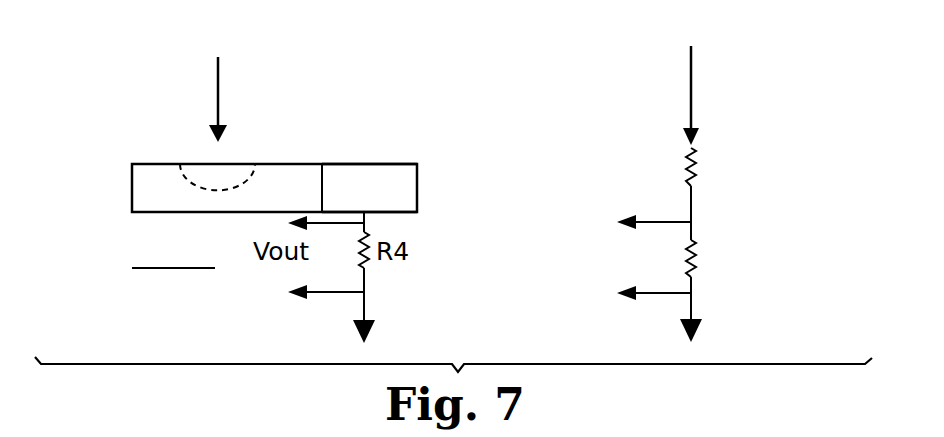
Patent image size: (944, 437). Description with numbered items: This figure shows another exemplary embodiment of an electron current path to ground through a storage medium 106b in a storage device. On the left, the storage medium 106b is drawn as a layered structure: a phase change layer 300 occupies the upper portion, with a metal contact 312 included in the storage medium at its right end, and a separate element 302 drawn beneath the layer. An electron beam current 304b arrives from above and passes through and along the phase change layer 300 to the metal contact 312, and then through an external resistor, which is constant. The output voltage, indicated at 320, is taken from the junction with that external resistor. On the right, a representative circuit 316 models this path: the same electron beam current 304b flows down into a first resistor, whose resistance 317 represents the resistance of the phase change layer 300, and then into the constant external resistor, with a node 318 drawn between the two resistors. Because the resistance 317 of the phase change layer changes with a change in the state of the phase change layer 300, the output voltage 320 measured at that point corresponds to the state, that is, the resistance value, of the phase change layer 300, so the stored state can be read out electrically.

The storage medium 106b is at (156, 108).
The phase change layer 300 is at (140, 192).
The substrate 302 is at (152, 245).
The electron beam current 304b is at (218, 91).
The metal contact 312 is at (417, 192).
The representative circuit 316 is at (702, 193).
The resistance of phase change layer R3 317 is at (687, 177).
The resistor R4 node 318 is at (691, 240).
The output Vout 320 is at (588, 290).